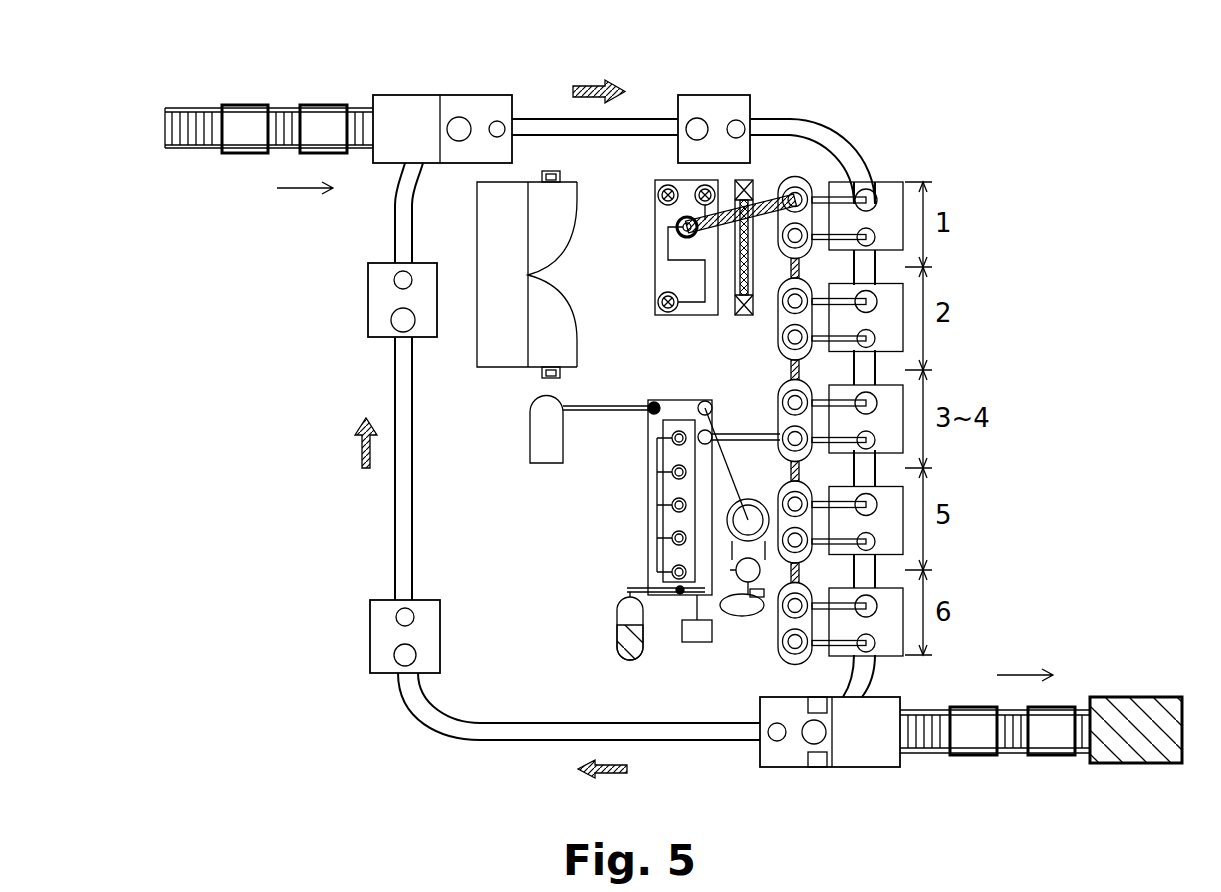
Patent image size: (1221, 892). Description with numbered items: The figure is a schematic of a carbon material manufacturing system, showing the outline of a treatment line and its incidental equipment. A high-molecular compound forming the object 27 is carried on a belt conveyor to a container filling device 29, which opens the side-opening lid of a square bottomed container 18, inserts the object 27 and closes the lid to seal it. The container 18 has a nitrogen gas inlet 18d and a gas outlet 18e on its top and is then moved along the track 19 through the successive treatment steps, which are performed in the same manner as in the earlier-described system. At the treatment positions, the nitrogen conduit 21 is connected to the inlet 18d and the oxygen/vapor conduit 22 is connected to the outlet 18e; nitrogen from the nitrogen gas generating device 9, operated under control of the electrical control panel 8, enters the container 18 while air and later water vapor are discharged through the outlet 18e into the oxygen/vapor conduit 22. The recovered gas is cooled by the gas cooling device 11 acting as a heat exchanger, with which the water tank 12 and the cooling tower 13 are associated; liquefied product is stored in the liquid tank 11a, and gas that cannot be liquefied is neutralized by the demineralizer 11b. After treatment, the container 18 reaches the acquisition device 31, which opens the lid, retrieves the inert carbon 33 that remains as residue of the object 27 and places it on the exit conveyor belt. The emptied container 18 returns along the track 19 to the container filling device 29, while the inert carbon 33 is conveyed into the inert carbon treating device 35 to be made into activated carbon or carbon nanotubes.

The electrical control panel 8 is at (563, 250).
The nitrogen gas generating device 9 is at (655, 212).
The gas cooling device 11 is at (700, 400).
The liquid tank 11a is at (612, 640).
The demineralizer 11b is at (530, 412).
The water tank 12 is at (743, 617).
The cooling tower 13 is at (752, 494).
The container 18 is at (487, 95).
The inlet 18d is at (697, 118).
The outlet 18e is at (740, 120).
The track 19 is at (862, 135).
The nitrogen conduit 21 is at (862, 190).
The oxygen/vapor conduit 22 is at (813, 243).
The object 27 is at (240, 105).
The container filling device 29 is at (402, 95).
The acquisition device 31 is at (865, 768).
The inert carbon 33 is at (975, 757).
The inert carbon treating device 35 is at (1137, 697).